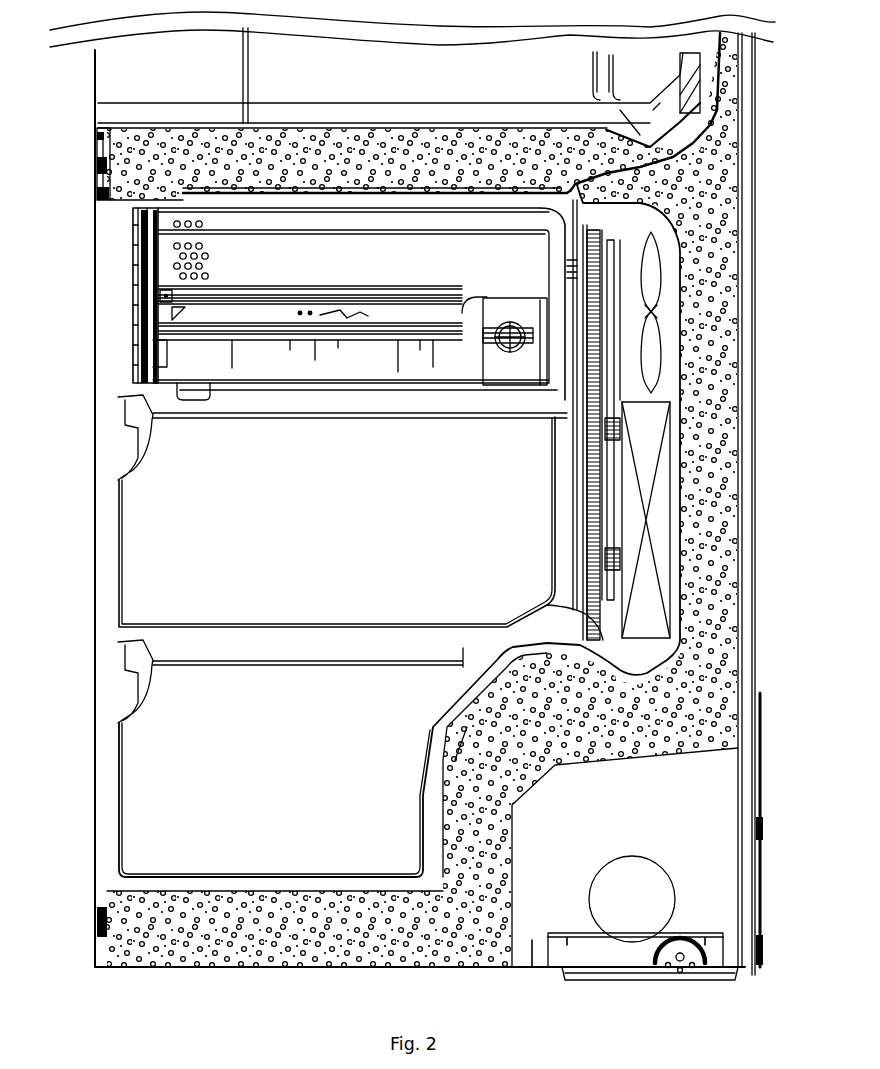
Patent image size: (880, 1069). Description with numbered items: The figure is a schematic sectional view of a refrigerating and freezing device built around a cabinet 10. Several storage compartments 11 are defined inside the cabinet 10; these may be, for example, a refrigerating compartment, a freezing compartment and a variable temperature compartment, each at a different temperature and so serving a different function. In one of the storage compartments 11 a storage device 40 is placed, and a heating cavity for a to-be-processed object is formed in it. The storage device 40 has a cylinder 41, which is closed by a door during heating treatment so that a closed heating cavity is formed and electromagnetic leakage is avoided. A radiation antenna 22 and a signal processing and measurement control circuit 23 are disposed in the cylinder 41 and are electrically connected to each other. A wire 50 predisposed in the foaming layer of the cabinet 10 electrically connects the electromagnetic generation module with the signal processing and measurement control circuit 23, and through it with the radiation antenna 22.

The cabinet 10 is at (84, 85).
The storage compartment 11 is at (110, 247).
The radiation antenna 22 is at (275, 340).
The signal processing and measurement control circuit 23 is at (489, 370).
The storage device 40 is at (303, 340).
The cylinder 41 is at (207, 385).
The wire 50 is at (695, 150).